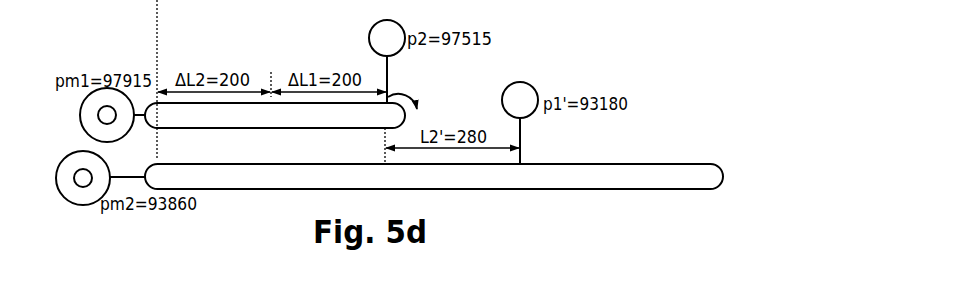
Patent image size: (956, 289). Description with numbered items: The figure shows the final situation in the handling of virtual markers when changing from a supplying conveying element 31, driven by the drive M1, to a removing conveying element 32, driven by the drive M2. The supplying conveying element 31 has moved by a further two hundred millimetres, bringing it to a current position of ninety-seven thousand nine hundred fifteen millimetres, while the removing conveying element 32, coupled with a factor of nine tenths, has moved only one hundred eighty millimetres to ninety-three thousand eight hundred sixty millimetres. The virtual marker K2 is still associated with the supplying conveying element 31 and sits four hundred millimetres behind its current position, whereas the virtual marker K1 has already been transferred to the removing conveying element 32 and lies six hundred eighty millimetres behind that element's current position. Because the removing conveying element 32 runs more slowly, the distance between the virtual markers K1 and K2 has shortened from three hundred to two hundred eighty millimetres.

The supplying conveying element 31 is at (317, 124).
The removing conveying element 32 is at (690, 170).
The drive M1 is at (88, 122).
The drive M2 is at (65, 185).
The virtual marker K1 is at (525, 97).
The virtual marker K2 is at (392, 35).